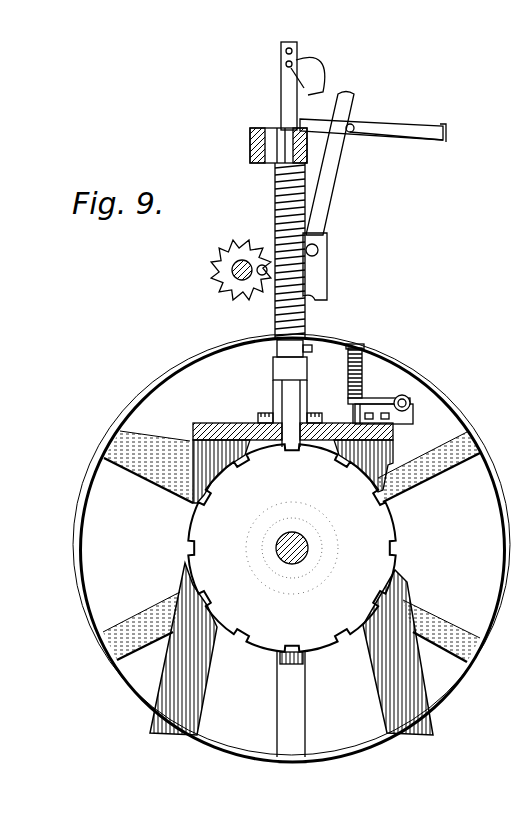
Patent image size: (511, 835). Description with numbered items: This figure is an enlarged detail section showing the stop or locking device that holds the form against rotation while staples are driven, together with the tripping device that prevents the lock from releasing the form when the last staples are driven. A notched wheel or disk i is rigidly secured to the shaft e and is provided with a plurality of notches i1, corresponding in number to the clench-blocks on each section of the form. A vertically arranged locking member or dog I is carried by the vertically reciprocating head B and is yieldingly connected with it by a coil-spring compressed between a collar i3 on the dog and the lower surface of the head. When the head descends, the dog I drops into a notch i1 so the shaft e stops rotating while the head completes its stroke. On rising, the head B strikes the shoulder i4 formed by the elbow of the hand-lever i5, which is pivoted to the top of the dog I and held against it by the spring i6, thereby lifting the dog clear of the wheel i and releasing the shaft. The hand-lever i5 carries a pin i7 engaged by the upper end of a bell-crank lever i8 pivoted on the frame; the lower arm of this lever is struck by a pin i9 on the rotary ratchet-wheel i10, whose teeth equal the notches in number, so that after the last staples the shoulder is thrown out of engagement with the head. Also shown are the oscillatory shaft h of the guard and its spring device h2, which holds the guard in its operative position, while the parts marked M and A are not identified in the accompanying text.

The ring frame M is at (63, 462).
The notched wheel or disk i is at (230, 519).
The shaft e is at (306, 543).
The pawl block A is at (170, 693).
The notches i1 is at (416, 552).
The locking member or dog I is at (290, 402).
The collar i3 is at (290, 346).
The reciprocating head B is at (267, 130).
The spring i6 is at (302, 82).
The shoulder i4 is at (307, 123).
The hand-lever i5 is at (415, 129).
The pin i7 is at (367, 135).
The bell-crank lever i8 is at (333, 200).
The rotary ratchet-wheel i10 is at (224, 264).
The pin i9 is at (262, 265).
The spring device h2 is at (367, 375).
The oscillatory shaft h is at (408, 398).